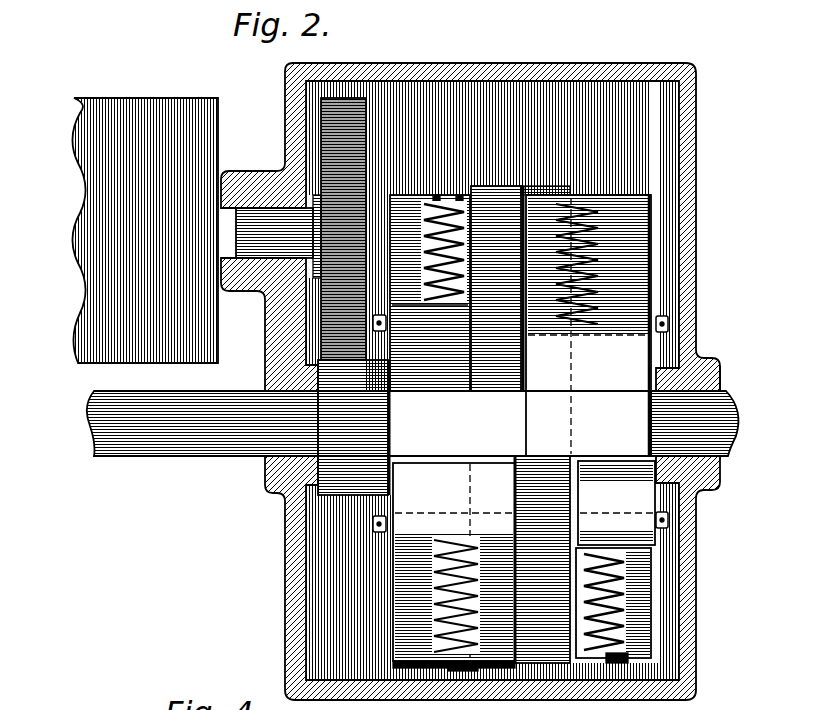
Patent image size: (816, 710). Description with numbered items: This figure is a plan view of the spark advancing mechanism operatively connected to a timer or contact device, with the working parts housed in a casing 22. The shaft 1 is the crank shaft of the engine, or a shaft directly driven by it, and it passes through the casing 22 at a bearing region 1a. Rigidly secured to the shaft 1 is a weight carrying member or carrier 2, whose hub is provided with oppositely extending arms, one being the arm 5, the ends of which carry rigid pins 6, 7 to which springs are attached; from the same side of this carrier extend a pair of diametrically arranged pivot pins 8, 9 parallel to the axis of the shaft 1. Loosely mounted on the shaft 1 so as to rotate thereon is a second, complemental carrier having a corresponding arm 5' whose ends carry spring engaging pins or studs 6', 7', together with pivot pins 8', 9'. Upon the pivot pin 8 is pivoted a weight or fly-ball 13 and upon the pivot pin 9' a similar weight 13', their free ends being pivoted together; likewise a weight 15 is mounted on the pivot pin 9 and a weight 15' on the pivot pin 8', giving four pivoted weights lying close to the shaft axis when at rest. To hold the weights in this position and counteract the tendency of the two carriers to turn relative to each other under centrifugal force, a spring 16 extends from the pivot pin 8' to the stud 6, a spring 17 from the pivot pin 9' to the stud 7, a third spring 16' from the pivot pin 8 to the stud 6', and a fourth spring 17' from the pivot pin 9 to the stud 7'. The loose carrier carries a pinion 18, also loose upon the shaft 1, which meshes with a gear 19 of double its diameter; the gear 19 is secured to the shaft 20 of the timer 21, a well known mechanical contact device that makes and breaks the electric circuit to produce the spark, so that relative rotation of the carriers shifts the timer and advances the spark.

The shaft 1 is at (82, 415).
The bearing 1a is at (718, 375).
The weight carrying member or carrier 2 is at (611, 483).
The arm 5 is at (588, 110).
The arm 5' is at (534, 110).
The pin 6 is at (618, 681).
The spring engaging pin or stud 6' is at (467, 686).
The pin 7 is at (630, 281).
The spring engaging pin or stud 7' is at (520, 344).
The pivot pin 8 is at (312, 552).
The pivot pin 8' is at (697, 515).
The pivot pin 9 is at (400, 512).
The pivot pin 9' is at (615, 495).
The weight or fly-ball 13 is at (370, 570).
The weight or fly-ball 13' is at (649, 247).
The weight or fly-ball 15 is at (438, 163).
The weight or fly-ball 15' is at (352, 595).
The spring 16 is at (662, 602).
The spring 16' is at (661, 603).
The spring 17 is at (693, 325).
The spring 17' is at (436, 208).
The pinion 18 is at (333, 472).
The gear 19 is at (357, 88).
The shaft 20 is at (265, 200).
The timer 21 is at (125, 110).
The casing 22 is at (638, 57).